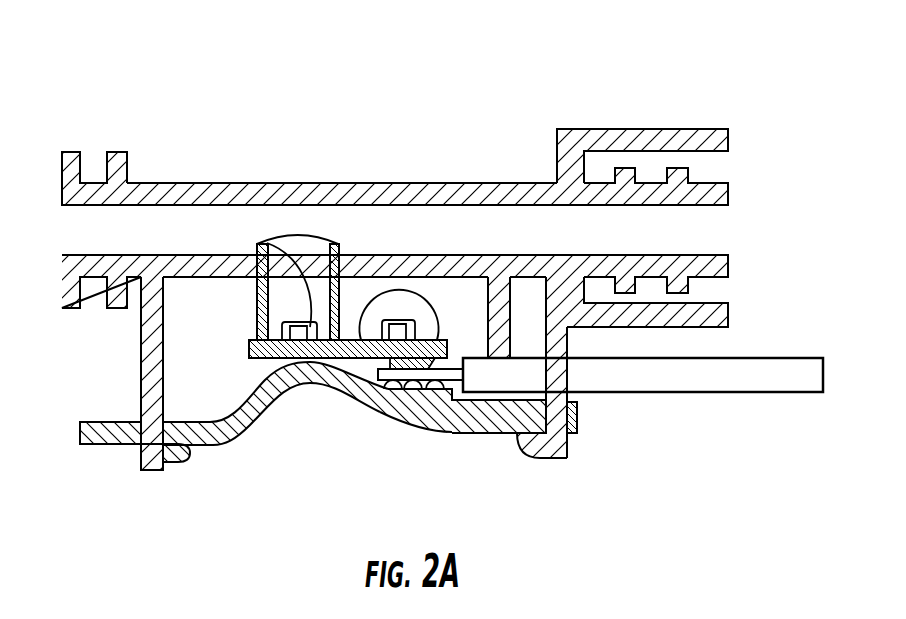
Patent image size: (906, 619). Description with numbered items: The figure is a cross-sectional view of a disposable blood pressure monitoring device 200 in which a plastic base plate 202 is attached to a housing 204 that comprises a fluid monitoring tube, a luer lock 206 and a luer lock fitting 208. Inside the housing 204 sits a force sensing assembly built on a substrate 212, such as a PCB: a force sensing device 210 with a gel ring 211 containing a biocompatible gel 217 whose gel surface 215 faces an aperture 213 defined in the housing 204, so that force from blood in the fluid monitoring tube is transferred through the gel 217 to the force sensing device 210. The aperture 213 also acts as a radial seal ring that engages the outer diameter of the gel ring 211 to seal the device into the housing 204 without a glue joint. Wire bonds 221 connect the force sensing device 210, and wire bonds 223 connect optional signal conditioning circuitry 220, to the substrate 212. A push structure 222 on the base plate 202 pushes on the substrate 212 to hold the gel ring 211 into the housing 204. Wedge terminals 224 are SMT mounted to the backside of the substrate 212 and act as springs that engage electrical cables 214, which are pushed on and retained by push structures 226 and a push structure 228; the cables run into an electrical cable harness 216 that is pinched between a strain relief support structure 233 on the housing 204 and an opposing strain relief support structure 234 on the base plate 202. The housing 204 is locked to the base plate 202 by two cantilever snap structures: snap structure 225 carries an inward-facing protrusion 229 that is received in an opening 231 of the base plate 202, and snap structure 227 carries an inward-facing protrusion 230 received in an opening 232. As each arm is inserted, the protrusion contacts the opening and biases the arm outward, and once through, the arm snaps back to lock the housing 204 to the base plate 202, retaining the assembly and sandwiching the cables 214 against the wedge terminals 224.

The disposable blood pressure monitoring device 200 is at (253, 57).
The base plate 202 is at (95, 446).
The housing 204 is at (350, 180).
The luer lock 206 is at (95, 160).
The luer lock fitting 208 is at (697, 128).
The force sensing device 210 is at (285, 331).
The gel ring 211 is at (317, 242).
The substrate 212 is at (263, 358).
The aperture 213 is at (344, 251).
The electrical cables 214 is at (462, 384).
The gel surface 215 is at (311, 235).
The electrical cable harness 216 is at (702, 377).
The gel 217 is at (312, 277).
The signal conditioning circuitry 220 is at (402, 335).
The wire bonds 221 is at (263, 241).
The push structure 222 is at (300, 380).
The wire bonds 223 is at (412, 335).
The wedge terminals 224 is at (442, 367).
The snap structure 225 is at (142, 377).
The push structures 226 is at (422, 393).
The snap structure 227 is at (568, 335).
The push structure 228 is at (392, 416).
The inward-facing protrusion 229 is at (188, 463).
The inward-facing protrusion 230 is at (555, 460).
The opening 231 is at (138, 450).
The opening 232 is at (580, 437).
The strain relief support structure 233 is at (503, 307).
The strain relief support structure 234 is at (498, 400).